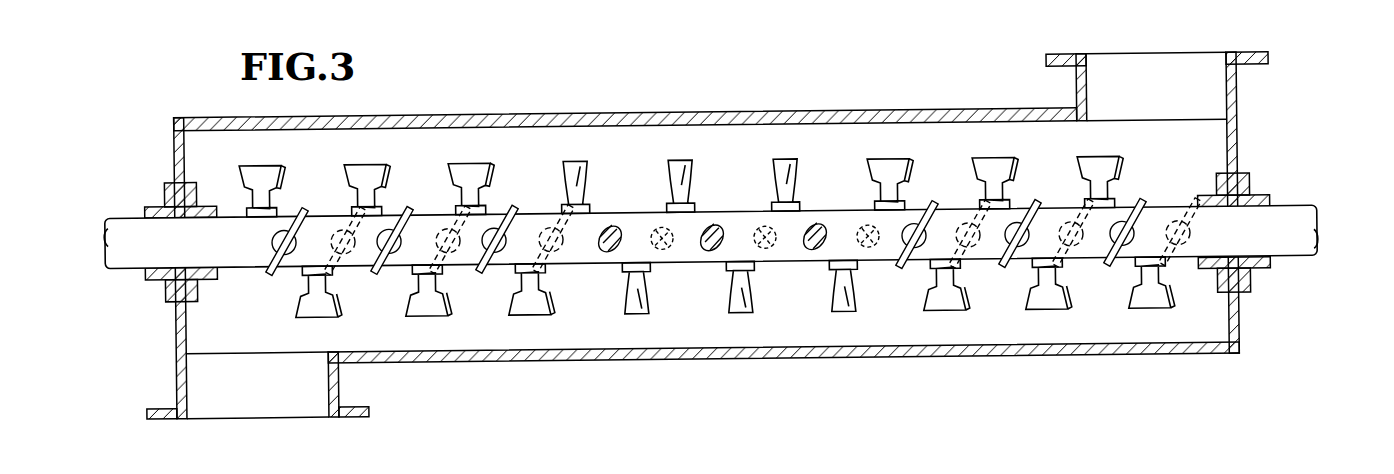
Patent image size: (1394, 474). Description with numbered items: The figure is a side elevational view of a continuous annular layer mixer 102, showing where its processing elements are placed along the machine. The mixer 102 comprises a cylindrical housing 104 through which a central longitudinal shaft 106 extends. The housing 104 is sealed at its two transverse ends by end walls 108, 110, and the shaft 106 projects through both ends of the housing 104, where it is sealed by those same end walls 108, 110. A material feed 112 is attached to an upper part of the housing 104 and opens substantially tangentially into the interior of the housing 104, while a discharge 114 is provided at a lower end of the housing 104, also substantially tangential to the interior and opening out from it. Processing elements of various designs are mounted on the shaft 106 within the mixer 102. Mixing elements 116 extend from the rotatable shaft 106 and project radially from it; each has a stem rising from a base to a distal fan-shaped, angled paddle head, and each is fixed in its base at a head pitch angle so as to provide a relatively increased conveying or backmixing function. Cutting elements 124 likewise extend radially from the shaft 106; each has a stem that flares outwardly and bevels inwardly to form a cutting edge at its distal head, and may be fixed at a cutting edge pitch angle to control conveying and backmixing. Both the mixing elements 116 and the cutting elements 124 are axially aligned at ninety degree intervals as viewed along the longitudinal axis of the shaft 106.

The continuous annular layer mixer 102 is at (528, 70).
The cylindrical housing 104 is at (815, 112).
The central longitudinal shaft 106 is at (1294, 212).
The end wall 108 is at (1238, 139).
The end wall 110 is at (177, 353).
The material feed 112 is at (1155, 58).
The discharge 114 is at (244, 414).
The mixing element 116 is at (1098, 160).
The cutting element 124 is at (790, 160).